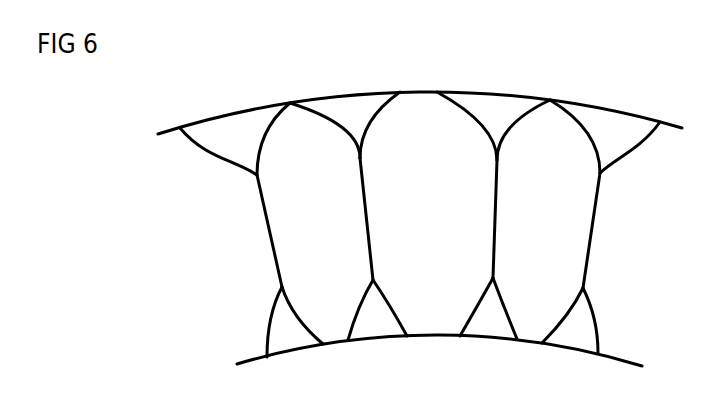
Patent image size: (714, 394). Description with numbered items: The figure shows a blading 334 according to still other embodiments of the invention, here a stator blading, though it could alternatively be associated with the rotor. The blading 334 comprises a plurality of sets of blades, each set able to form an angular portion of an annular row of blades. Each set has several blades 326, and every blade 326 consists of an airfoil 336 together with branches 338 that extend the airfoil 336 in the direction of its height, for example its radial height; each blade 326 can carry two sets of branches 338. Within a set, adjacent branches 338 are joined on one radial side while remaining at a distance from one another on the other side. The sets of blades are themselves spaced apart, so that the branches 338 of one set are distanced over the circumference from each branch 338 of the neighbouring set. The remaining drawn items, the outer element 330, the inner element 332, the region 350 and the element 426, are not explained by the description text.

The blade 326 is at (206, 90).
The outer ring 330 is at (427, 92).
The inner ring 332 is at (428, 335).
The blading 334 is at (165, 244).
The airfoil 336 is at (364, 239).
The branch 338 is at (217, 157).
The web 350 is at (315, 155).
The inner band 426 is at (288, 388).